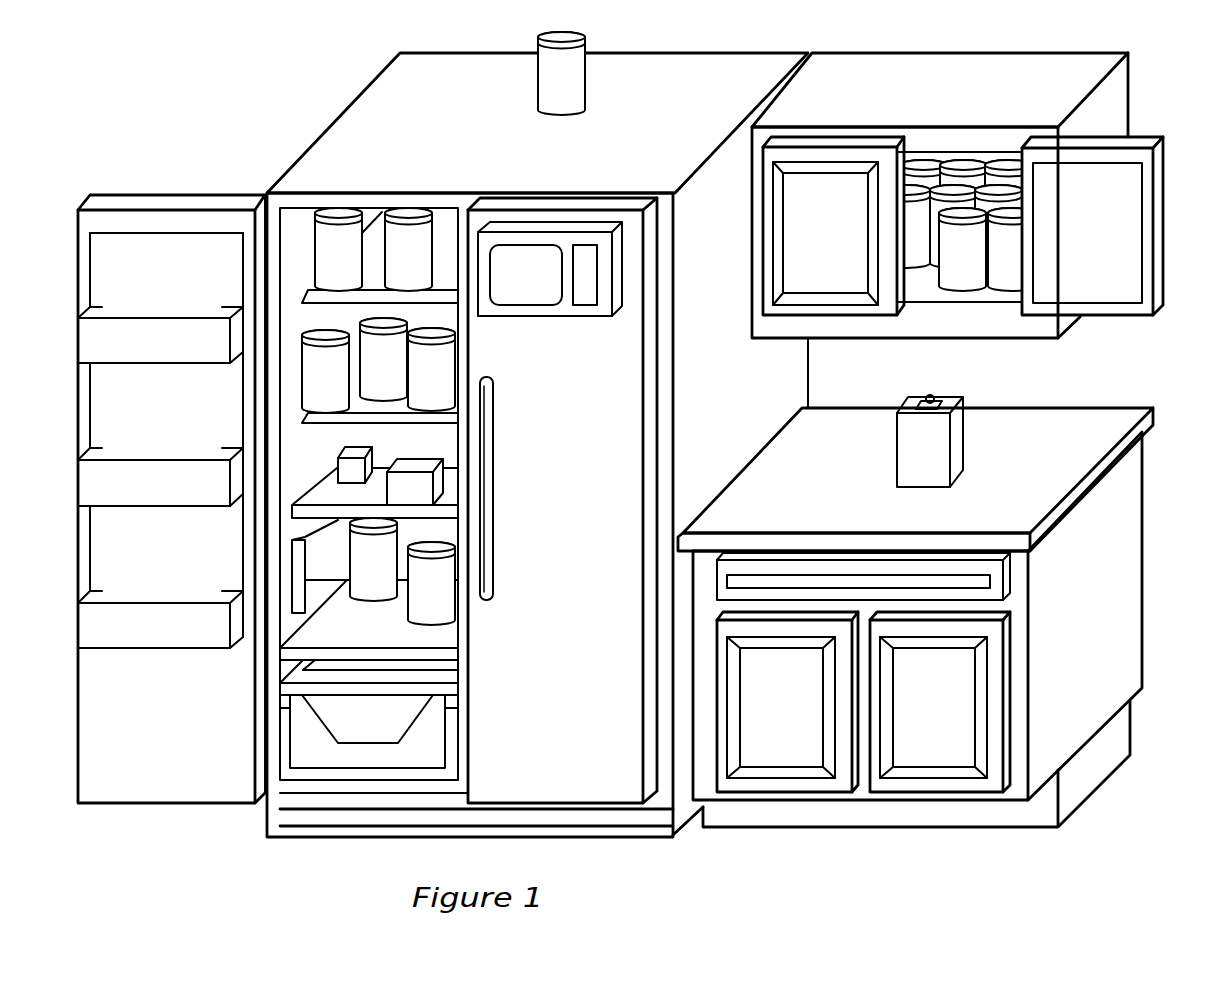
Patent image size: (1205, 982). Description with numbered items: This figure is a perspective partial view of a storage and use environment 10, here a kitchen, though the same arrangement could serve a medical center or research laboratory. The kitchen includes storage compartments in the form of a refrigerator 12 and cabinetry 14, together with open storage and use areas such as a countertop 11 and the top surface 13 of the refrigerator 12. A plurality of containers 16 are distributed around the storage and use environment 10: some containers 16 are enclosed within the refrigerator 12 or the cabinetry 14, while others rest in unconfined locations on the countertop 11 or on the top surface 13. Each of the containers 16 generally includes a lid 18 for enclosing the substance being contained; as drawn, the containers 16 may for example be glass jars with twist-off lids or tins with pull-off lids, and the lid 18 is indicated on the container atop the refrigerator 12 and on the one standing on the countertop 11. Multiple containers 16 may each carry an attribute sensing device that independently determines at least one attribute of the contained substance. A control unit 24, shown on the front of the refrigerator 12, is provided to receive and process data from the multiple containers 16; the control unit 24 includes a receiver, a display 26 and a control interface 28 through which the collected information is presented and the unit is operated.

The storage and use environment 10 is at (223, 147).
The countertop 11 is at (1046, 473).
The refrigerator 12 is at (578, 636).
The top surface of the refrigerator 13 is at (659, 128).
The cabinetry 14 is at (987, 157).
The containers 16 is at (346, 273).
The lid 18 is at (537, 33).
The control unit 24 is at (540, 323).
The display 26 is at (512, 290).
The control interface 28 is at (585, 300).